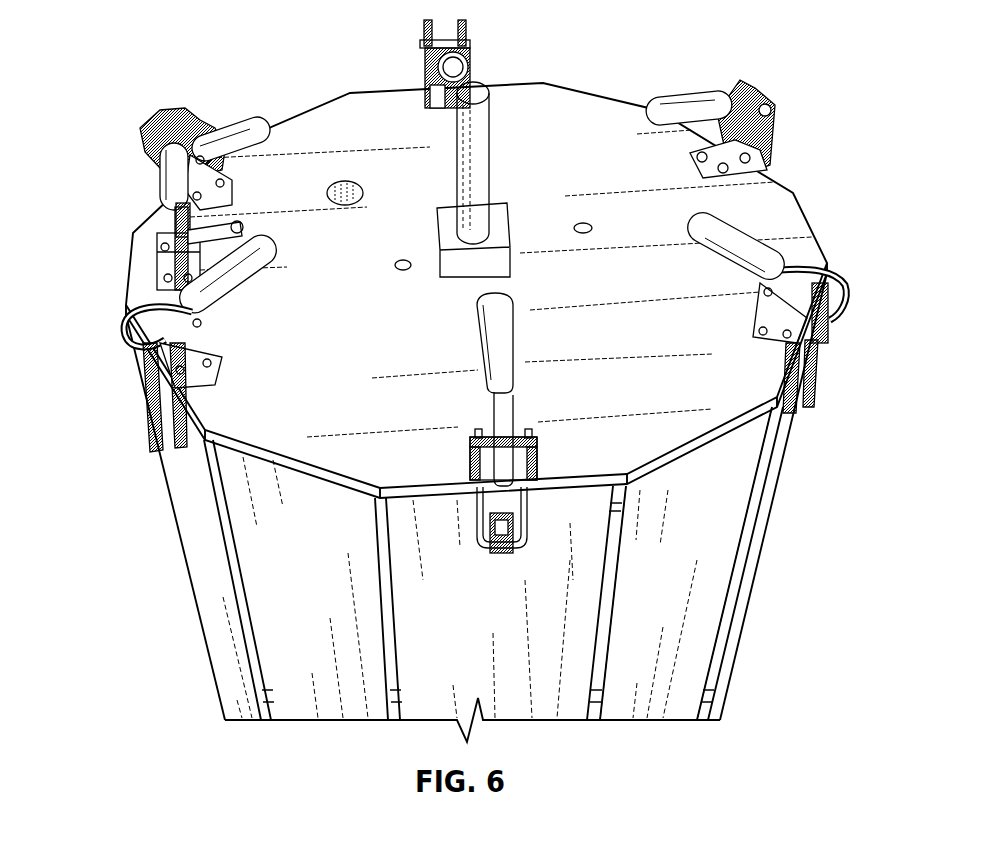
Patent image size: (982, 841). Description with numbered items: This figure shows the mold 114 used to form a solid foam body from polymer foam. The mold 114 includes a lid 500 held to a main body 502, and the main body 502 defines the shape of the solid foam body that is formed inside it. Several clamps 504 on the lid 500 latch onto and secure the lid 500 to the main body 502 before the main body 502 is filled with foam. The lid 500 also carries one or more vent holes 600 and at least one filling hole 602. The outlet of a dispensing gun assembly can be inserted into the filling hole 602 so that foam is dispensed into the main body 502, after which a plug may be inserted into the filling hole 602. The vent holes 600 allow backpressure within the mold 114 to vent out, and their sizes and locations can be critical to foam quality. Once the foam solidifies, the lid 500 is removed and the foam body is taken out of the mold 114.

The mold 114 is at (114, 66).
The lid 500 is at (562, 412).
The main body 502 is at (653, 570).
The clamps 504 is at (773, 313).
The vent holes 600 is at (583, 222).
The filling hole 602 is at (347, 181).